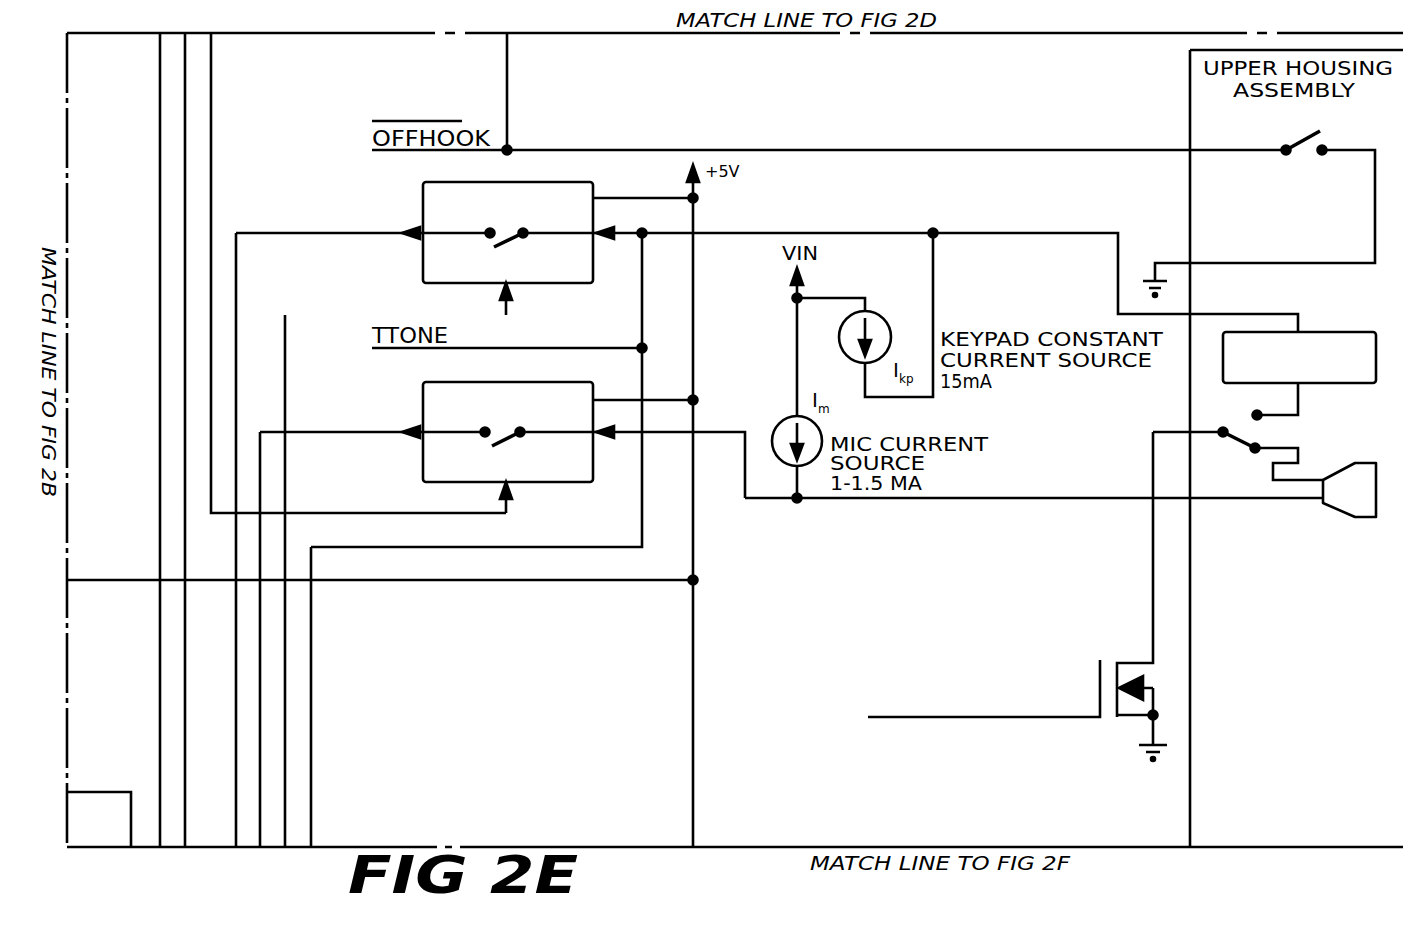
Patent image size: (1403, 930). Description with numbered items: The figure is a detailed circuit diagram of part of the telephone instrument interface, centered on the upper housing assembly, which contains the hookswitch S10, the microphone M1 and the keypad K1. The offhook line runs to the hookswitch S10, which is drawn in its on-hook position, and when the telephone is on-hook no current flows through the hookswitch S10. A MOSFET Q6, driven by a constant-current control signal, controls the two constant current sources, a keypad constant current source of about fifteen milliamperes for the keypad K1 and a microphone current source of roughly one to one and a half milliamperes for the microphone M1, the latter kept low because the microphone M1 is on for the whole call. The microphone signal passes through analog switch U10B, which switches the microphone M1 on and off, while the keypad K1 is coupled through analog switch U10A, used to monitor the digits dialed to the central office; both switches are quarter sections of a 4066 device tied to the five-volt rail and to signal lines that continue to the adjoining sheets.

The analog switch U10A is at (767, 257).
The analog switch U10B is at (502, 447).
The hookswitch S10 is at (1259, 207).
The keypad K1 is at (1299, 363).
The microphone M1 is at (1301, 502).
The MOSFET Q6 is at (1025, 610).